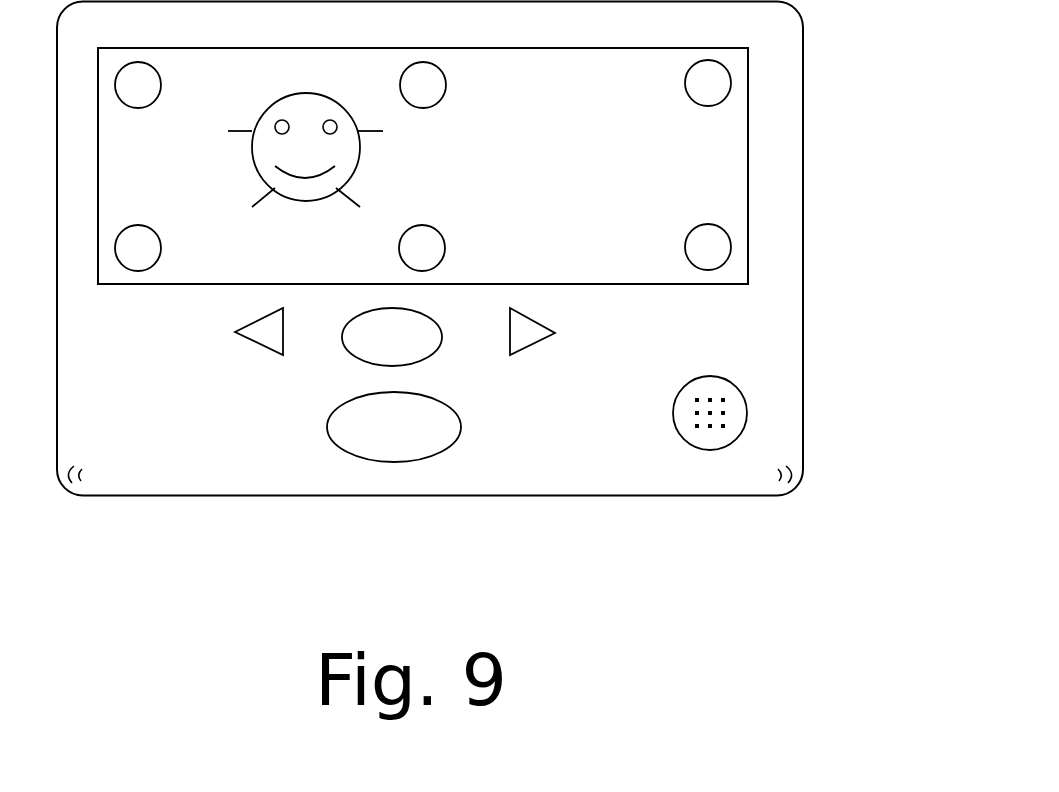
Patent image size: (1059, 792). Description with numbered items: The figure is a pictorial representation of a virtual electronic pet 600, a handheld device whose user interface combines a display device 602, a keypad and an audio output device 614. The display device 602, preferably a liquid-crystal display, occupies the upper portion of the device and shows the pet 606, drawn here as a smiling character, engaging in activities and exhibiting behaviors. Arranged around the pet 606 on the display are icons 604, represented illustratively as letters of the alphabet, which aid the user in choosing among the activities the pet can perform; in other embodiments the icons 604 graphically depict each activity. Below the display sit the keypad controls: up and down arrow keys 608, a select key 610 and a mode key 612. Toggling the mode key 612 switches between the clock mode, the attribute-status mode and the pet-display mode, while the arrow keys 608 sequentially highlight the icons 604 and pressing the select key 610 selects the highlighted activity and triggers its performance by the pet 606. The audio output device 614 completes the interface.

The virtual electronic pet 600 is at (848, 143).
The display device 602 is at (537, 47).
The icons 604 is at (161, 87).
The pet 606 is at (356, 168).
The up and down arrow keys 608 is at (258, 345).
The select key 610 is at (441, 345).
The mode key 612 is at (460, 428).
The audio output device 614 is at (715, 378).